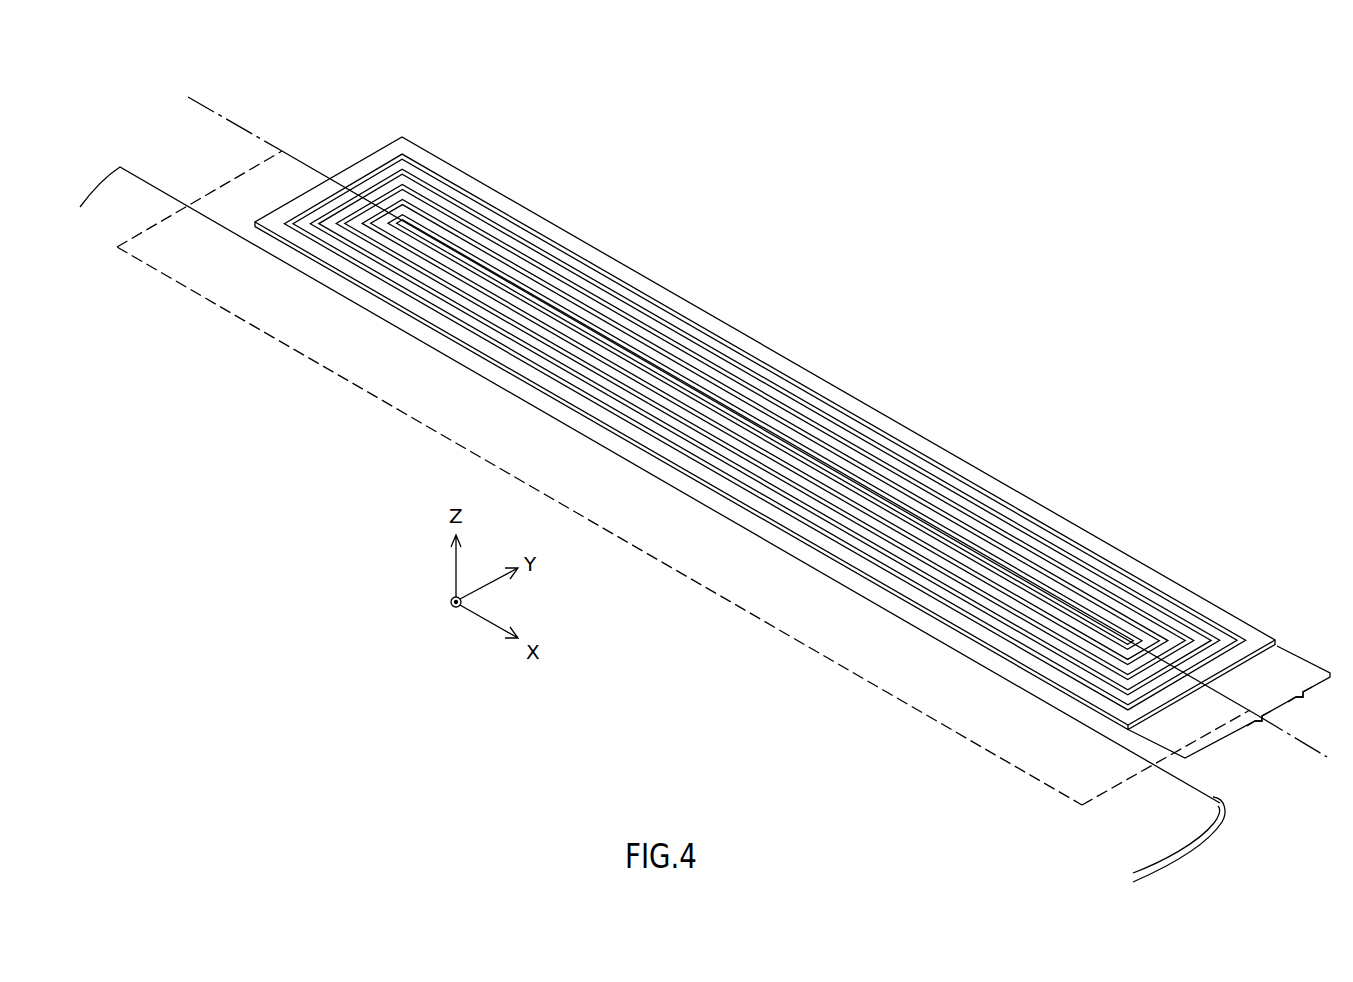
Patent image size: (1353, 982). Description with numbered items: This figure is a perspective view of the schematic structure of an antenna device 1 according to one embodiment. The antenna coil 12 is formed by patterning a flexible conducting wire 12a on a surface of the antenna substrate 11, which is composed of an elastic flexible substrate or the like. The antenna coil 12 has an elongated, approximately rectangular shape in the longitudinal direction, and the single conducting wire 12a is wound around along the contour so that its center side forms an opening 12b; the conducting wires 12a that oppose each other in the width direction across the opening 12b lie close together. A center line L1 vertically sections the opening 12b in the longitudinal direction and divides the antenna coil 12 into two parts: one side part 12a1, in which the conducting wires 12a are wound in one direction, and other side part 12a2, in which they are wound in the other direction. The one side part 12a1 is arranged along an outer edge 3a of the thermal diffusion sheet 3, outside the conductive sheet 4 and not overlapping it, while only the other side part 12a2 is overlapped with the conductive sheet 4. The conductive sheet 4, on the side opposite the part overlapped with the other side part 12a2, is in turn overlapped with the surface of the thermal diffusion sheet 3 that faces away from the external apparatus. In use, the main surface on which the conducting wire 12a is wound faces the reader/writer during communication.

The antenna device 1 is at (893, 114).
The thermal diffusion sheet 3 is at (1137, 837).
The outer edge 3a is at (1217, 797).
The conductive sheet 4 is at (228, 200).
The antenna substrate 11 is at (1083, 541).
The antenna coil 12 is at (769, 380).
The conducting wire 12a is at (425, 172).
The one side part 12a1 is at (1320, 705).
The other side part 12a2 is at (1253, 738).
The opening 12b is at (765, 433).
The center line L1 is at (1313, 750).